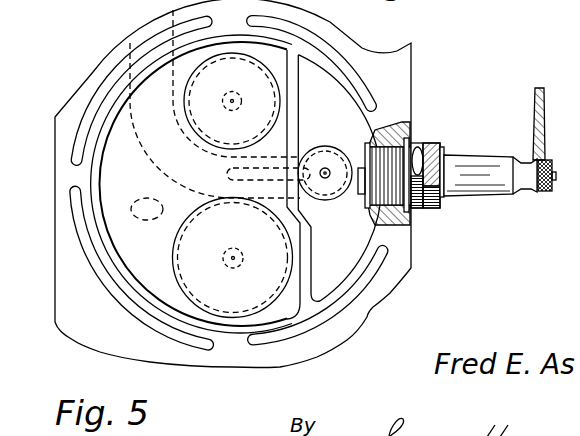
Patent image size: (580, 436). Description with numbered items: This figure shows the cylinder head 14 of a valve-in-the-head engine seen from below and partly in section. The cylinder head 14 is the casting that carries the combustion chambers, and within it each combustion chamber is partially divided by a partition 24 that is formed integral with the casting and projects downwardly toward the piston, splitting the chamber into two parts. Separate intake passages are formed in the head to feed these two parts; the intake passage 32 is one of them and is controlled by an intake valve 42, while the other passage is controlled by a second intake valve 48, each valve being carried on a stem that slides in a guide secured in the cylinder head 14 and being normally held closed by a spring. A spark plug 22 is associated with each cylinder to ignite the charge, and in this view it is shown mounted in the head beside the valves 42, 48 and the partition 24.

The cylinder head 14 is at (62, 229).
The spark plug 22 is at (478, 160).
The partition 24 is at (300, 264).
The intake passage 32 is at (177, 184).
The intake valve 42 is at (327, 152).
The intake valve 48 is at (197, 139).